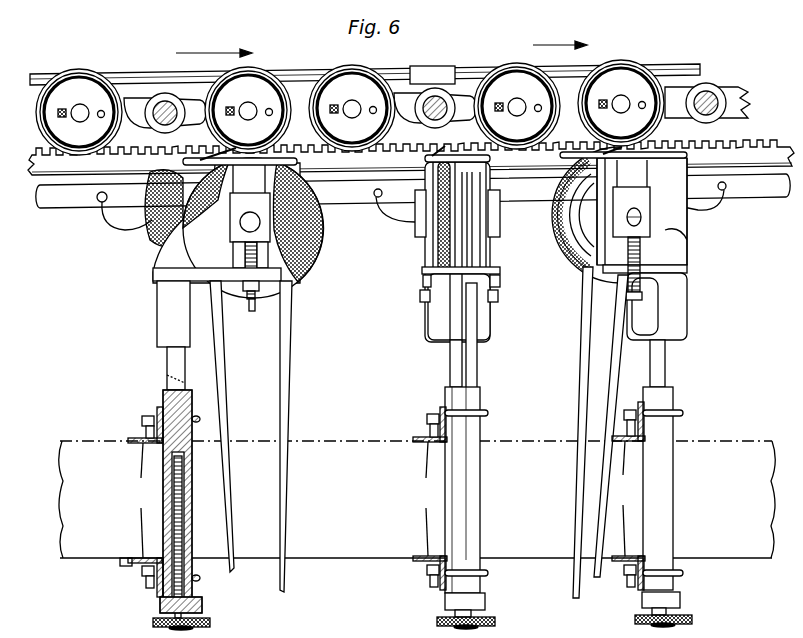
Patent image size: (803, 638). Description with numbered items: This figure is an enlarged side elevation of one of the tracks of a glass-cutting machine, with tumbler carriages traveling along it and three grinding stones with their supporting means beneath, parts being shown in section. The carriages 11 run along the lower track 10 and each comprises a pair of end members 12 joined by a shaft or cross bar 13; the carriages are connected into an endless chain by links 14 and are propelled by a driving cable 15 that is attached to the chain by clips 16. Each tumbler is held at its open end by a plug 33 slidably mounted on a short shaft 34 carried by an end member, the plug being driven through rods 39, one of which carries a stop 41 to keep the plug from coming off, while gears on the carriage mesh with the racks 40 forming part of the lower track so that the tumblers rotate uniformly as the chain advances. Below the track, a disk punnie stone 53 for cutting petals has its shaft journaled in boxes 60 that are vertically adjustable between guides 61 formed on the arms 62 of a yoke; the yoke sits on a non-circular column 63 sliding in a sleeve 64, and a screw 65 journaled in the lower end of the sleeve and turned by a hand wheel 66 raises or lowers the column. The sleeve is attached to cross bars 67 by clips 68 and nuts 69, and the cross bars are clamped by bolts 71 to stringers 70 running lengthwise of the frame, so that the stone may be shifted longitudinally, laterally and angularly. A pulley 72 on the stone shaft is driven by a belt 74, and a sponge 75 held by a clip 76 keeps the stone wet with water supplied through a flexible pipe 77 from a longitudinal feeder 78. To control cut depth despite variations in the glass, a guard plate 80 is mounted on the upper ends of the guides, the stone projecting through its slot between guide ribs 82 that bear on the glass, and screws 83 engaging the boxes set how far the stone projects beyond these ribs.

The lower track 10 is at (767, 142).
The carriage 11 is at (750, 78).
The end member 12 is at (142, 98).
The shaft or cross bar 13 is at (166, 106).
The link 14 is at (300, 97).
The driving cable 15 is at (122, 74).
The clip 16 is at (427, 67).
The plug 33 is at (72, 70).
The short shaft 34 is at (80, 104).
The rod 39 is at (66, 118).
The rack 40 is at (411, 157).
The stop 41 is at (503, 112).
The punnie stone 53 is at (318, 250).
The box 60 is at (693, 232).
The guide 61 is at (172, 244).
The arm 62 is at (702, 312).
The column 63 is at (165, 372).
The sleeve 64 is at (160, 397).
The screw 65 is at (181, 590).
The hand wheel 66 is at (212, 623).
The cross bar 67 is at (380, 499).
The clip 68 is at (200, 420).
The nut 69 is at (150, 418).
The stringer 70 is at (417, 499).
The bolt 71 is at (135, 568).
The pulley 72 is at (470, 242).
The belt 74 is at (290, 404).
The sponge 75 is at (150, 204).
The clip 76 is at (156, 238).
The flexible pipe 77 is at (98, 216).
The longitudinal feeder 78 is at (413, 191).
The plate 80 is at (300, 162).
The guide rib 82 is at (212, 150).
The screw 83 is at (250, 302).